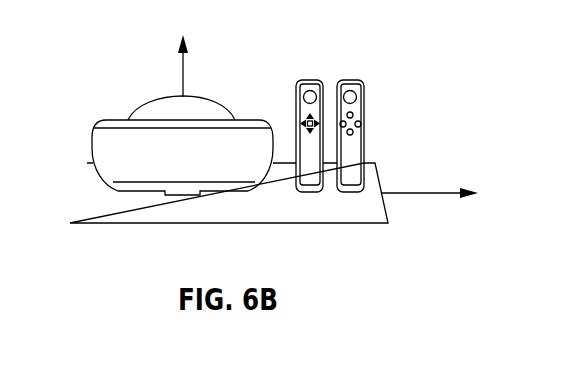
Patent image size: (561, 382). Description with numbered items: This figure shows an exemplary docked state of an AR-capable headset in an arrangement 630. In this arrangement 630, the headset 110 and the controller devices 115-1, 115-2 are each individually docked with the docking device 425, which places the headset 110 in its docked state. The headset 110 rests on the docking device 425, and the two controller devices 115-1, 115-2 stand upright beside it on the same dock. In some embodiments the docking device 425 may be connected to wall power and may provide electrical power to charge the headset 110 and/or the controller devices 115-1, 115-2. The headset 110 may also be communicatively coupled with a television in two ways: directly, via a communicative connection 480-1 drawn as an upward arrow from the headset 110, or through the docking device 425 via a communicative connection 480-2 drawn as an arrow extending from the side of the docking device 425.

The arrangement 630 is at (413, 53).
The docking device 425 is at (382, 179).
The headset 110 is at (205, 97).
The communicative connection 480-1 is at (181, 72).
The communicative connection 480-2 is at (430, 197).
The controller device 115-1 is at (310, 80).
The controller device 115-2 is at (349, 80).